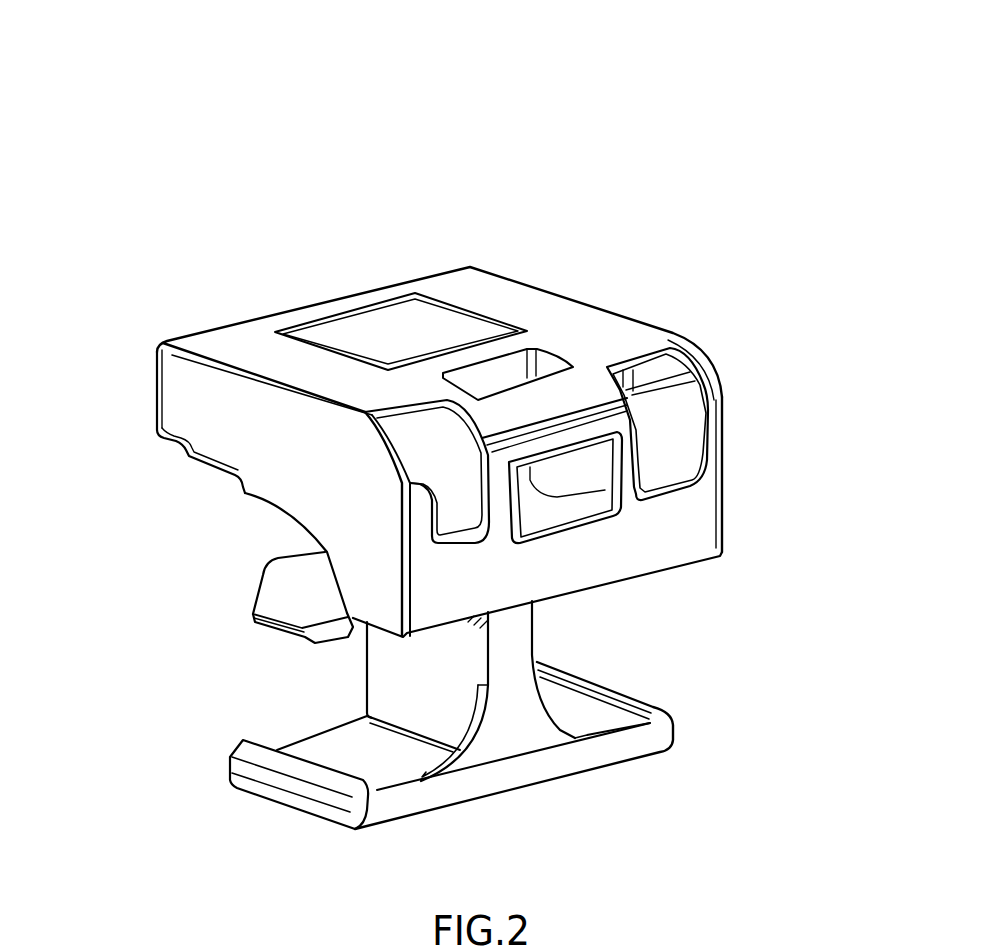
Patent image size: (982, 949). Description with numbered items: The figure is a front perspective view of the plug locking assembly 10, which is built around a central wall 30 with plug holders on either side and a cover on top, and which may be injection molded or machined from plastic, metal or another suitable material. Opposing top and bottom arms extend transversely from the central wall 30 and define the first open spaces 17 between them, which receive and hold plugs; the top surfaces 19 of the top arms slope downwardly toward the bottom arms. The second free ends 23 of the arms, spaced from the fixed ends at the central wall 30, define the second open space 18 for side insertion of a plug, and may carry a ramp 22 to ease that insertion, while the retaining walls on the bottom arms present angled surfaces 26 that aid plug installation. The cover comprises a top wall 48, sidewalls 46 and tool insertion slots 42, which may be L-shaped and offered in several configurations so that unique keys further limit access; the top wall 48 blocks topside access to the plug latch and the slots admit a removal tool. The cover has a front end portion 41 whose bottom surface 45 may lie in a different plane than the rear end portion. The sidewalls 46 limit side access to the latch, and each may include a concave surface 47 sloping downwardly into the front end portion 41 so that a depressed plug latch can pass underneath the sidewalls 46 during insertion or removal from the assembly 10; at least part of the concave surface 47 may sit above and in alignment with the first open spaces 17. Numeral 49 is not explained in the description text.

The plug locking assembly 10 is at (412, 208).
The first open spaces 17 is at (592, 633).
The second open space 18 is at (250, 717).
The top surfaces 19 is at (280, 597).
The ramp 22 is at (293, 640).
The second free ends 23 is at (222, 633).
The angled surfaces 26 is at (310, 773).
The central wall 30 is at (507, 687).
The front end portion 41 is at (550, 402).
The tool insertion slots 42 is at (655, 422).
The bottom surface 45 is at (628, 578).
The sidewalls 46 is at (198, 404).
The concave surface 47 is at (240, 485).
The top wall 48 is at (518, 278).
The central window 49 is at (538, 515).